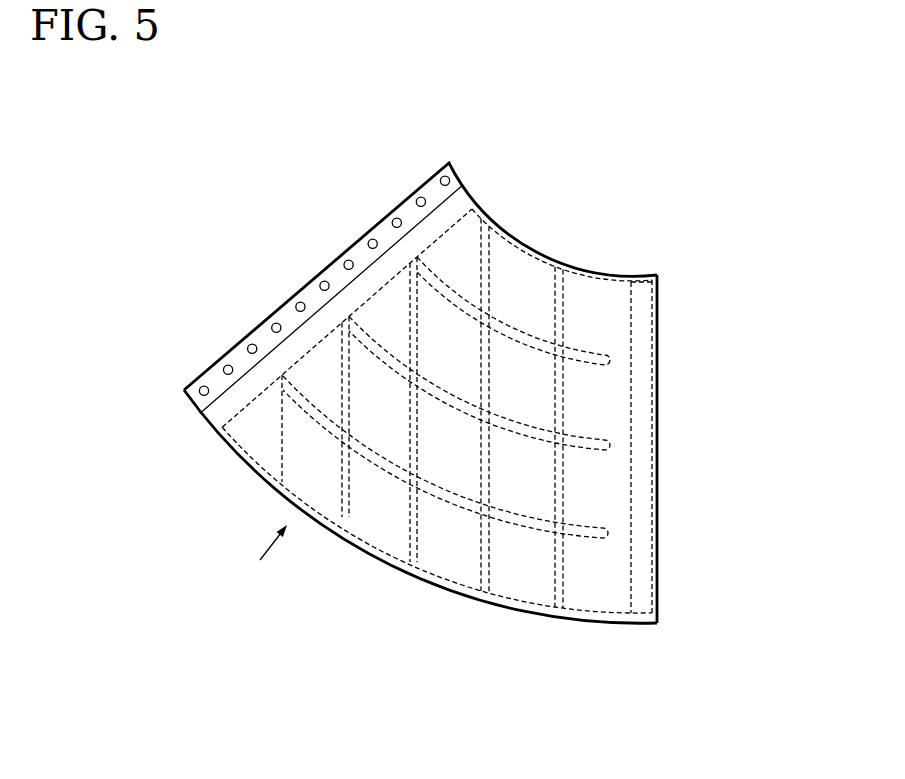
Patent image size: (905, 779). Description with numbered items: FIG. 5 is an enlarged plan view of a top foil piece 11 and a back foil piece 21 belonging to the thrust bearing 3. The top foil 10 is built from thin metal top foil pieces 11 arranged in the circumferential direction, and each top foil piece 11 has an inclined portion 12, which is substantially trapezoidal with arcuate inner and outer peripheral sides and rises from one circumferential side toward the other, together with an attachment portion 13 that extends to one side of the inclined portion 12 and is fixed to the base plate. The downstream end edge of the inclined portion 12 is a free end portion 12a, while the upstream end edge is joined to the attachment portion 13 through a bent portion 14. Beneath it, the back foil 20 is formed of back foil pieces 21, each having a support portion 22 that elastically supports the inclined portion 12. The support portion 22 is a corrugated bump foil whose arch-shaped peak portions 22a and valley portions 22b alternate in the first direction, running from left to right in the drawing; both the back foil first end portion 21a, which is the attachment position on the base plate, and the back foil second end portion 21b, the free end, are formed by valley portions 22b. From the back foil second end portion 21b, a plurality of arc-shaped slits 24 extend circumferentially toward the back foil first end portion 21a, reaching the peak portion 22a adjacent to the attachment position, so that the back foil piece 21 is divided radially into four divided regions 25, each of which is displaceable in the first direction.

The thrust bearing 3 is at (246, 170).
The top foil 10 is at (356, 563).
The top foil piece 11 is at (358, 515).
The inclined portion 12 is at (505, 248).
The end portion on the other side in the circumferential direction 12a is at (658, 332).
The attachment portion 13 is at (335, 270).
The bent portion 14 is at (390, 256).
The back foil 20 is at (370, 560).
The back foil piece 21 is at (432, 581).
The back foil first end portion 21a is at (640, 521).
The back foil second end portion 21b is at (320, 345).
The support portion 22 is at (606, 686).
The peak portion 22a is at (513, 560).
The valley portion 22b is at (560, 586).
The slit 24 is at (460, 397).
The divided region 25 is at (338, 385).